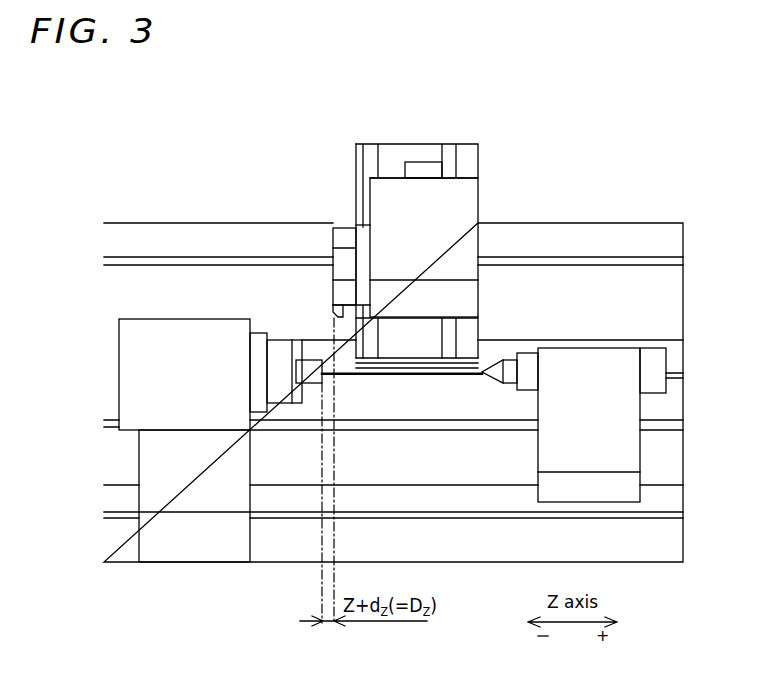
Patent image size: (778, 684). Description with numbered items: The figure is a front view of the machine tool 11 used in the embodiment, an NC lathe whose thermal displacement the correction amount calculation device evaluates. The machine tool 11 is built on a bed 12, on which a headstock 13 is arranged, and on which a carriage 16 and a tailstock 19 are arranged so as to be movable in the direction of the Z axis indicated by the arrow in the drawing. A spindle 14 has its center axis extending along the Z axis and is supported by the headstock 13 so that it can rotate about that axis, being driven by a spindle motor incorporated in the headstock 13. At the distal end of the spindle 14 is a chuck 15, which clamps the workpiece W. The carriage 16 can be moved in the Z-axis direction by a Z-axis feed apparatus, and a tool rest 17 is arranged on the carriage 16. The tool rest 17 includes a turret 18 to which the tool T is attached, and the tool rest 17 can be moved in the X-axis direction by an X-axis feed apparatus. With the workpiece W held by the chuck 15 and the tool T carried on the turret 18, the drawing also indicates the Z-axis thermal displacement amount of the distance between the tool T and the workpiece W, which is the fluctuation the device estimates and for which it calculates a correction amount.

The machine tool 11 is at (261, 120).
The bed 12 is at (678, 285).
The headstock 13 is at (177, 325).
The spindle 14 is at (258, 335).
The chuck 15 is at (282, 350).
The carriage 16 is at (402, 153).
The tool rest 17 is at (475, 188).
The turret 18 is at (336, 255).
The tailstock 19 is at (645, 413).
The tool T is at (313, 362).
The workpiece W is at (335, 308).